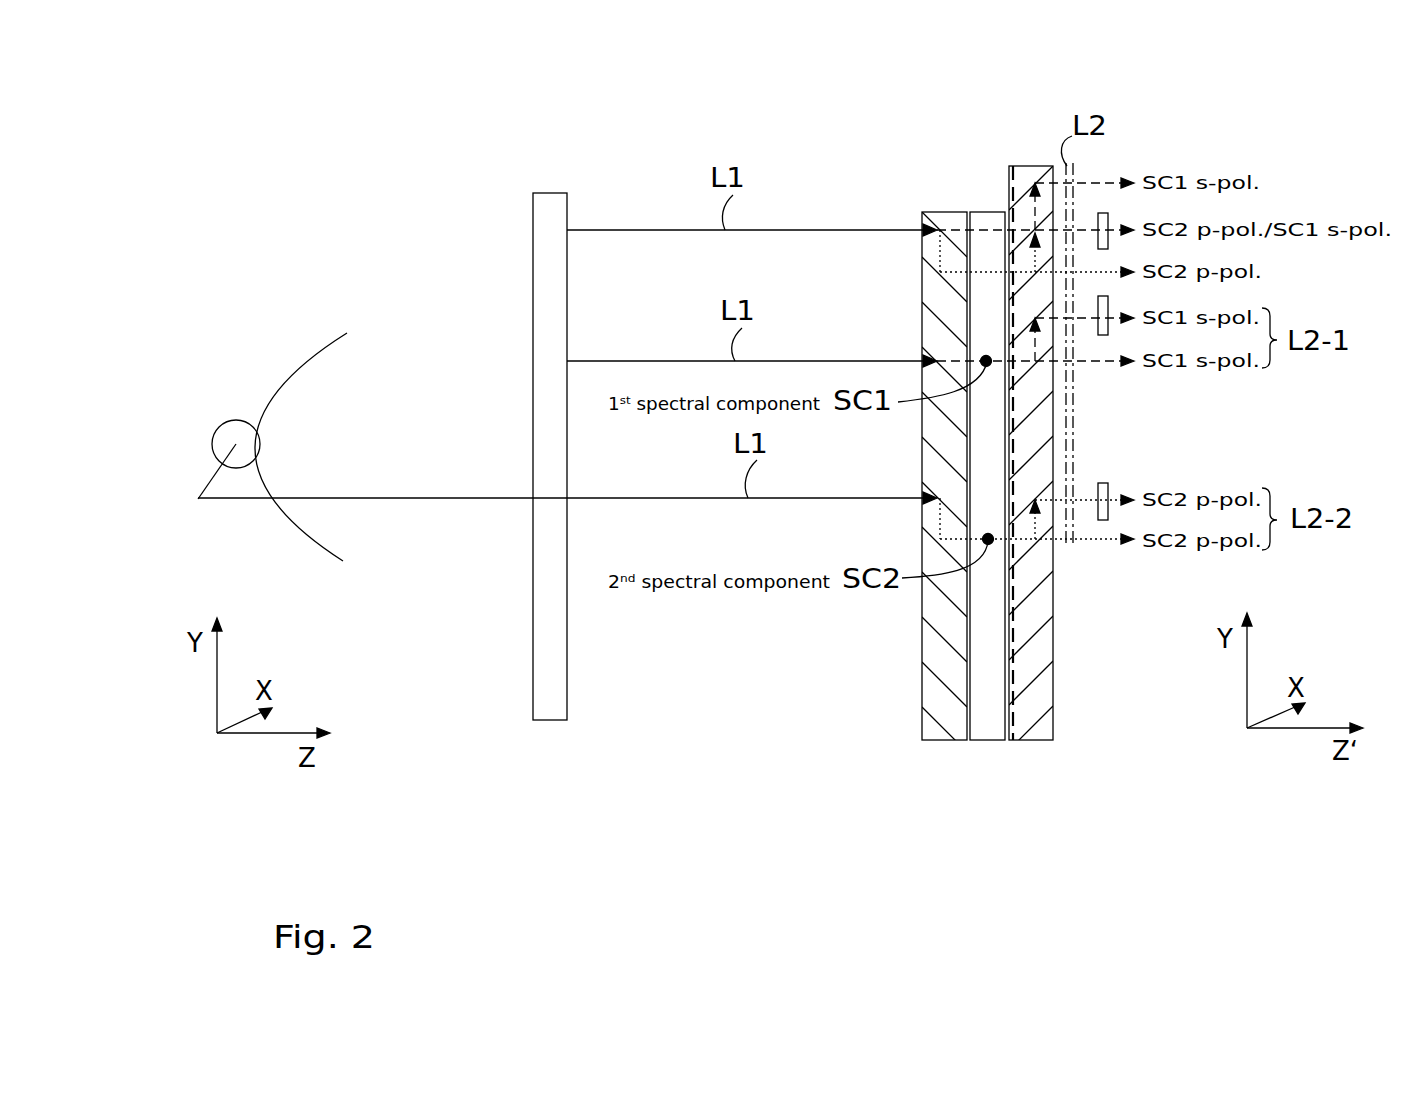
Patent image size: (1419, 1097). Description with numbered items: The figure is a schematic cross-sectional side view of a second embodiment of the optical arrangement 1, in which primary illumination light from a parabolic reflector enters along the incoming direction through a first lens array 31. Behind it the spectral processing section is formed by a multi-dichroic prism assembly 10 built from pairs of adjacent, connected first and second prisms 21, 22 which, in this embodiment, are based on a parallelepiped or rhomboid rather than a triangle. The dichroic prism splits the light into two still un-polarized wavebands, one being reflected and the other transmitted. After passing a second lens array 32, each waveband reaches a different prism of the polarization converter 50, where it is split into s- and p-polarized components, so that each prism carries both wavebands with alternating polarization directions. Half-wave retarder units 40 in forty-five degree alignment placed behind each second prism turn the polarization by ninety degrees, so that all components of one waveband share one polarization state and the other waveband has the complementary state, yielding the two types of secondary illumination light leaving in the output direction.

The optical arrangement 1 is at (525, 799).
The multi-dichroic prism assembly 10 is at (1093, 525).
The first prism 21 is at (942, 652).
The second prism 22 is at (943, 697).
The first lens array 31 is at (550, 205).
The second lens array 32 is at (983, 742).
The λ/2 retarder unit 40 is at (1100, 213).
The polarization converting system 50 is at (1030, 165).